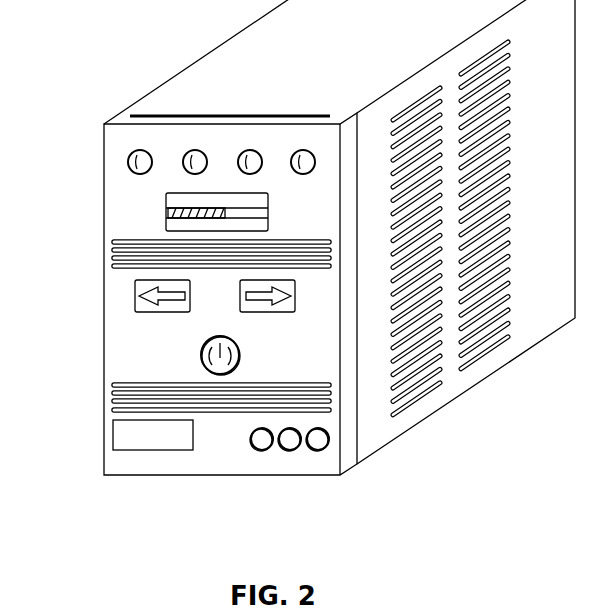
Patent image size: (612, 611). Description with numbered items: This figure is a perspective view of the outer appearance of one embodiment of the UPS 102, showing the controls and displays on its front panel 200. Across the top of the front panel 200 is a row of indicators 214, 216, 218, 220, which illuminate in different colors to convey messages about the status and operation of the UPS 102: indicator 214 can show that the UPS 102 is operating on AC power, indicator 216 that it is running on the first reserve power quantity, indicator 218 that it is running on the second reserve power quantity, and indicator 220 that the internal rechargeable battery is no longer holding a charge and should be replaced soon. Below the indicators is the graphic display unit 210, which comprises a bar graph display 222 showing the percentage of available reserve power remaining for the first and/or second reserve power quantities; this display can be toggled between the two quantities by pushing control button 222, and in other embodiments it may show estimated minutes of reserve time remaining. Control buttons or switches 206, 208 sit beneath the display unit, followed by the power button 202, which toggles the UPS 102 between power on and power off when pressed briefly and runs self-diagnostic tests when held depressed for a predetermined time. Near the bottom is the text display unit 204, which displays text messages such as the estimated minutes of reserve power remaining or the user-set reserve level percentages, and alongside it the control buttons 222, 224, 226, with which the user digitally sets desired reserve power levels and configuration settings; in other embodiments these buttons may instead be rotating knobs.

The UPS 102 is at (431, 417).
The front panel 200 is at (298, 476).
The power button 202 is at (203, 353).
The text display unit 204 is at (113, 437).
The control button 206 is at (258, 314).
The control button 208 is at (135, 296).
The graphic display unit 210 is at (156, 219).
The indicator 214 is at (128, 160).
The indicator 216 is at (194, 150).
The indicator 218 is at (251, 150).
The indicator 220 is at (304, 150).
The bar graph display / control button 222 is at (168, 213).
The control button 224 is at (289, 452).
The control button 226 is at (328, 440).